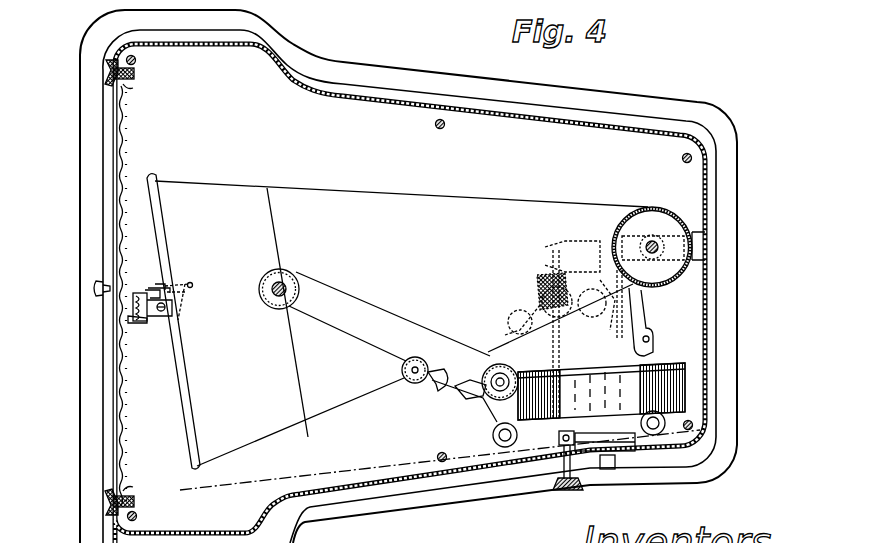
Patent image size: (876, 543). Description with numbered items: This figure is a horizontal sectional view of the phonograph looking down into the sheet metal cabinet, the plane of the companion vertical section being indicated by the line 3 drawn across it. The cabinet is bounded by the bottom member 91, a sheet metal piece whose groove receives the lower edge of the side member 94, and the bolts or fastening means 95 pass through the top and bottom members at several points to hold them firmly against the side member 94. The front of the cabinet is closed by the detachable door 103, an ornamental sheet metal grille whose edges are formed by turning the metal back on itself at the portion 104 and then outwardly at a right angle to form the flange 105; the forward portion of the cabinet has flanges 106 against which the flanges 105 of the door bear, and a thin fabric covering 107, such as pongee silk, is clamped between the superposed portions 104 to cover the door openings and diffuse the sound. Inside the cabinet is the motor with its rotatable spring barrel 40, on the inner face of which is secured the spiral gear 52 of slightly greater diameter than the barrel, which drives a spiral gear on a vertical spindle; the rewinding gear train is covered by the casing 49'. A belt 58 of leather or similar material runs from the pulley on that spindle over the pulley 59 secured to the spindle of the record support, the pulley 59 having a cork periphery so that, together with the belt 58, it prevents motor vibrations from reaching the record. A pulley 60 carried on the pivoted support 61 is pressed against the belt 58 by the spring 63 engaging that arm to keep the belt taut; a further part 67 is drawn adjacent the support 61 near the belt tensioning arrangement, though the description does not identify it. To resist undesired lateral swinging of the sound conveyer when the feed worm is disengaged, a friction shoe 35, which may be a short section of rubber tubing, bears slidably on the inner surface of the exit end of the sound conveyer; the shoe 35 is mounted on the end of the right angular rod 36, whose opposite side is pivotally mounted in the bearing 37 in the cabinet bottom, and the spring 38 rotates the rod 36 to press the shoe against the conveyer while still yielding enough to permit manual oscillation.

The section line 3— 3 is at (712, 428).
The friction shoe 35 is at (172, 330).
The right angular rod 36 is at (148, 292).
The bearing 37 is at (157, 320).
The spring 38 is at (147, 313).
The spring barrel 40 is at (686, 389).
The casing 49' is at (612, 469).
The spiral gear 52 is at (690, 367).
The belt 58 is at (394, 329).
The pulley 59 is at (291, 281).
The pulley 60 is at (402, 371).
The support 61 is at (431, 381).
The spring 63 is at (446, 366).
The arm 67 is at (478, 389).
The bottom member 91 is at (682, 120).
The side member 94 is at (611, 130).
The bolts 95 is at (134, 57).
The detachable door 103 is at (103, 127).
The turned-back edge portion 104 is at (108, 78).
The flange 105 is at (136, 88).
The flange 106 is at (134, 73).
The covering 107 is at (127, 177).